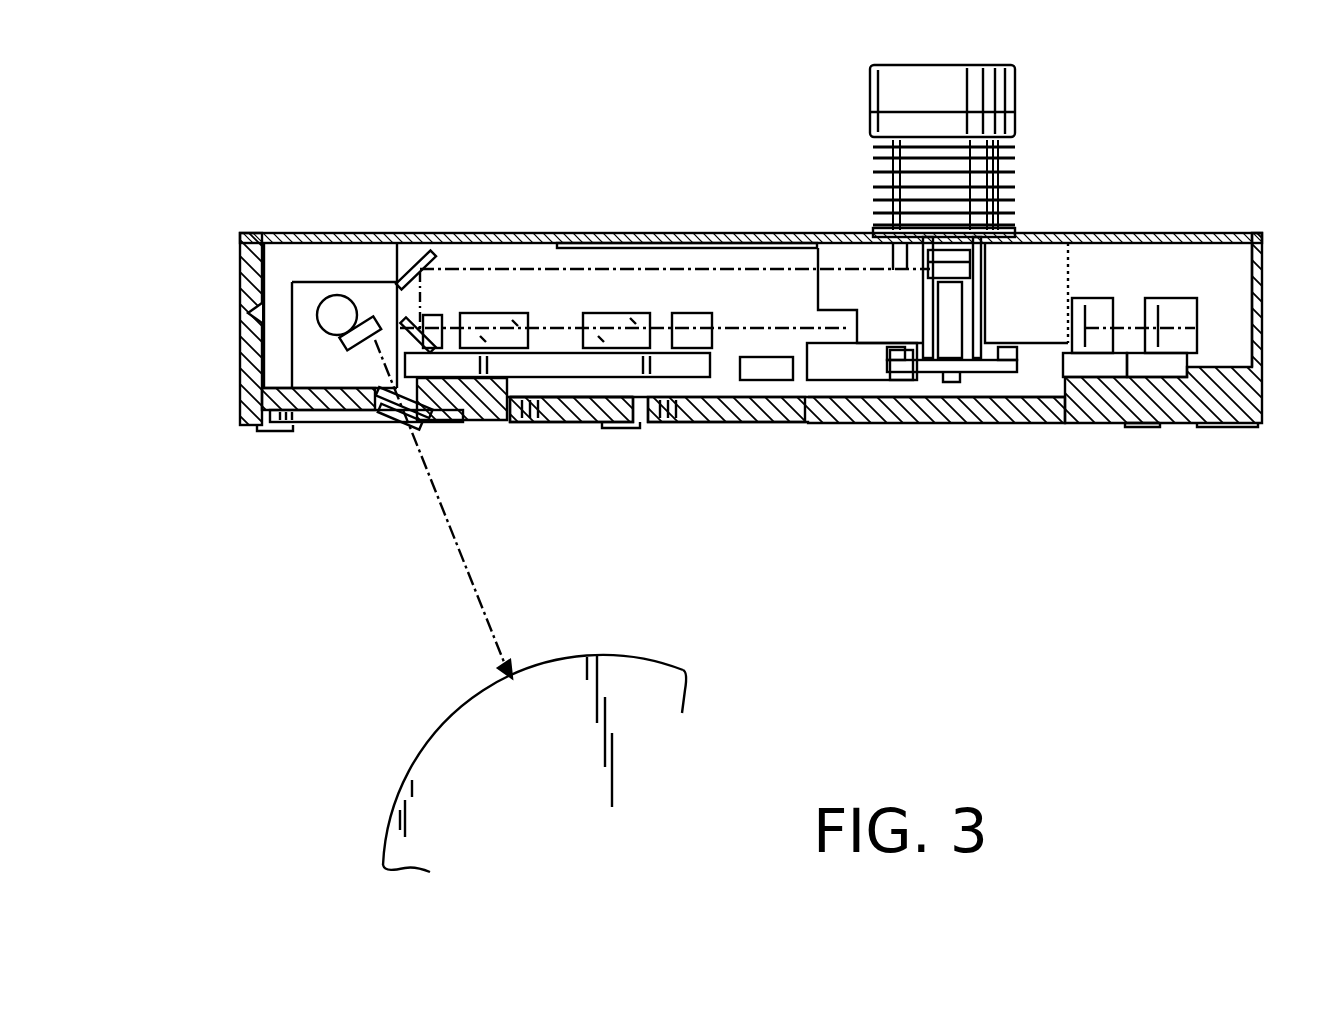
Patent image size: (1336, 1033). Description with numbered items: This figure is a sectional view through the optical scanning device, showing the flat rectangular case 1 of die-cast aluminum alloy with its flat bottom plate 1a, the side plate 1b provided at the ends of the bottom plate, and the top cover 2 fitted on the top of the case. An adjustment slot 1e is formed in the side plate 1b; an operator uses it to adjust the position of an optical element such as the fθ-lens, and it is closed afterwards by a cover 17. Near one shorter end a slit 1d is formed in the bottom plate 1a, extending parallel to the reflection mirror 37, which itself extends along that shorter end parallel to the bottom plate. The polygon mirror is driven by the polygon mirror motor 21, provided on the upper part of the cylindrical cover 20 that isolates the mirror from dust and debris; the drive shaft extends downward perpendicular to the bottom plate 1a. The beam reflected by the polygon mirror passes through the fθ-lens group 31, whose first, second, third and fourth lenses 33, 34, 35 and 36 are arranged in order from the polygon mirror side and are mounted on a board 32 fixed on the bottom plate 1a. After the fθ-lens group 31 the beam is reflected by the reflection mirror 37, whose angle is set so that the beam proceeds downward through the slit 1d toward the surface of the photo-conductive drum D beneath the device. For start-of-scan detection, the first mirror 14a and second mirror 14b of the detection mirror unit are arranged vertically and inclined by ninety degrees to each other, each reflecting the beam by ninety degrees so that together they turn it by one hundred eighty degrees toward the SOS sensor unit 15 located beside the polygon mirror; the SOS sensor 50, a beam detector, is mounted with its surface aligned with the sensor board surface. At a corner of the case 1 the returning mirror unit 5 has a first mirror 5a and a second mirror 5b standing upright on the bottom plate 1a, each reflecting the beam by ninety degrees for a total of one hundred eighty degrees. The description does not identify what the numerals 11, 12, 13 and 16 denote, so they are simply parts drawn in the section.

The case 1 is at (1263, 267).
The bottom plate 1a is at (731, 407).
The side plate 1b is at (252, 262).
The slit 1d is at (385, 420).
The adjustment slot 1e is at (247, 312).
The top cover 2 is at (522, 233).
The returning mirror unit 5 is at (1130, 300).
The first mirror 5a is at (1173, 267).
The second mirror 5b is at (1082, 267).
The motor 11 is at (1017, 98).
The base plate 12 is at (588, 367).
The light source holder 13 is at (305, 292).
The first mirror 14a is at (398, 323).
The second mirror 14b is at (420, 255).
The SOS sensor unit 15 is at (985, 295).
The window glass 16 is at (400, 428).
The cover 17 is at (240, 410).
The cylindrical cover 20 is at (833, 258).
The polygon mirror motor 21 is at (1000, 167).
The fθ-lens group 31 is at (562, 310).
The board 32 is at (543, 367).
The first lens 33 is at (692, 320).
The second lens 34 is at (600, 320).
The third lens 35 is at (502, 290).
The fourth lens 36 is at (436, 317).
The reflection mirror 37 is at (340, 350).
The SOS sensor 50 is at (985, 272).
The photo-conductive drum D is at (412, 778).